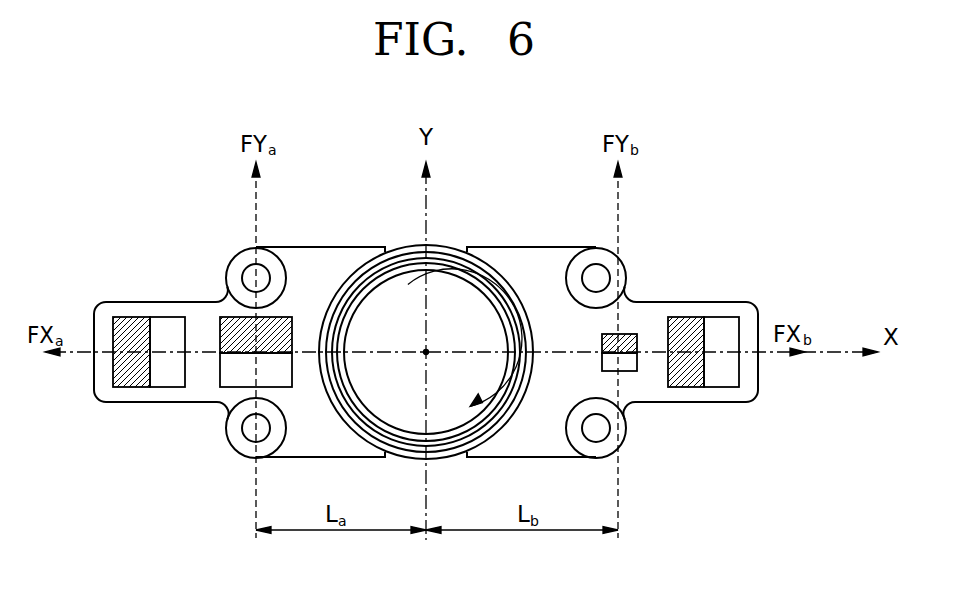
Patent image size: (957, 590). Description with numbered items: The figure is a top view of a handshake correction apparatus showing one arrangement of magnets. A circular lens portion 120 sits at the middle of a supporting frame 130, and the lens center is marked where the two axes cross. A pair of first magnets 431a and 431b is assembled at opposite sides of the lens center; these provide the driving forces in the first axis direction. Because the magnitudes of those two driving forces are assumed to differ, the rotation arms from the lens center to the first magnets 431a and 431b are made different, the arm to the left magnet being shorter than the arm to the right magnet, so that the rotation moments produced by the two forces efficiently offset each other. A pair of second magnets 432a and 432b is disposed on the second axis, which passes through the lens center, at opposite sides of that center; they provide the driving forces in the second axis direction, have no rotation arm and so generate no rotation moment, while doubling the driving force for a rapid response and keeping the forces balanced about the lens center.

The rotating body (roller) 120 is at (447, 297).
The supporting body (bracket) 130 is at (535, 268).
The first magnet 431a is at (233, 377).
The first magnet 431b is at (630, 372).
The second magnet 432a is at (132, 377).
The second magnet 432b is at (722, 377).